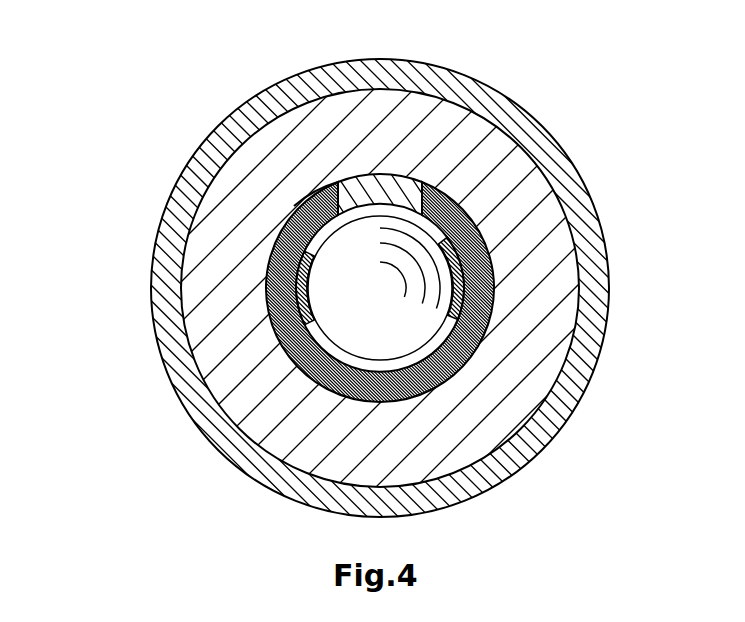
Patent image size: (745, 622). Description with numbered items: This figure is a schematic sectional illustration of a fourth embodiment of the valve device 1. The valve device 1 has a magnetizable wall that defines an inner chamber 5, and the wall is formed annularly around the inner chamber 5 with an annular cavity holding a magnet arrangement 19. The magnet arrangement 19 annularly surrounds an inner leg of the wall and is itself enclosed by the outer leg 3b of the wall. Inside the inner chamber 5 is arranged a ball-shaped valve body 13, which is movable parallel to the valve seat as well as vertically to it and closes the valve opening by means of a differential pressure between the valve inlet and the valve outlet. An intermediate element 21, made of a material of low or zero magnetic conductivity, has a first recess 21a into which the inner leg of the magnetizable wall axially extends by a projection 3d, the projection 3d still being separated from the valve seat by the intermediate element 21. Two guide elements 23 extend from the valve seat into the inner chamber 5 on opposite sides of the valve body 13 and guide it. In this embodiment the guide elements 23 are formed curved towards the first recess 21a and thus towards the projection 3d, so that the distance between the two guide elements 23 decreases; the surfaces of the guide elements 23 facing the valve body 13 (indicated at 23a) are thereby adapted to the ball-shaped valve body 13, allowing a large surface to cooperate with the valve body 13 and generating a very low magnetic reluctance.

The valve device 1 is at (587, 108).
The outer leg 3b is at (257, 100).
The projection 3d is at (381, 185).
The inner chamber 5 is at (303, 333).
The valve body 13 is at (371, 310).
The magnet arrangement 19 is at (517, 217).
The intermediate element 21 is at (473, 362).
The first recess 21a is at (323, 178).
The guide elements 23 is at (300, 290).
The insert segment inner face 23a is at (300, 240).